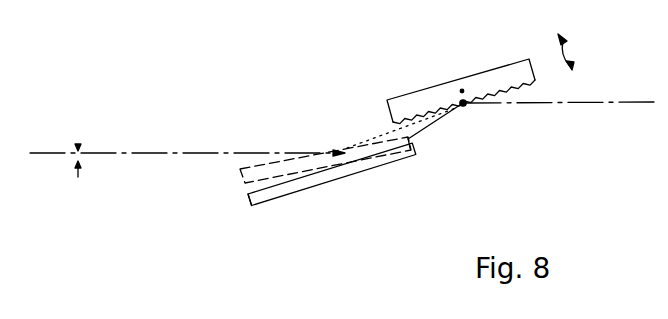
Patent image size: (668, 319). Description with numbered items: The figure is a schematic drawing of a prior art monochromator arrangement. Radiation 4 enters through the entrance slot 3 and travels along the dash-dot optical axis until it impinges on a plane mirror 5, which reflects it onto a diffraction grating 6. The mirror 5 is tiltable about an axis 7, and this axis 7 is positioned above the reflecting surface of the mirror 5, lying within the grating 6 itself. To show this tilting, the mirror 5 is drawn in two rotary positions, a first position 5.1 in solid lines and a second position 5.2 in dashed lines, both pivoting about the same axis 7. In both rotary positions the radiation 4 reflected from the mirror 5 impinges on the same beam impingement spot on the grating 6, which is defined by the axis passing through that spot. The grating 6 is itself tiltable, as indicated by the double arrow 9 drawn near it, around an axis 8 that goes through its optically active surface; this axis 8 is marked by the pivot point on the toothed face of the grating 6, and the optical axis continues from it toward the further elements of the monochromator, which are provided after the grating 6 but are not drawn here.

The entrance slot 3 is at (78, 149).
The radiation 4 is at (182, 152).
The plane mirror 5 is at (357, 173).
The first position of the mirror 5.1 is at (250, 205).
The second position of the mirror 5.2 is at (242, 175).
The diffraction grating 6 is at (498, 77).
The axis 7 is at (461, 90).
The axis 8 is at (464, 107).
The double arrow 9 is at (567, 50).